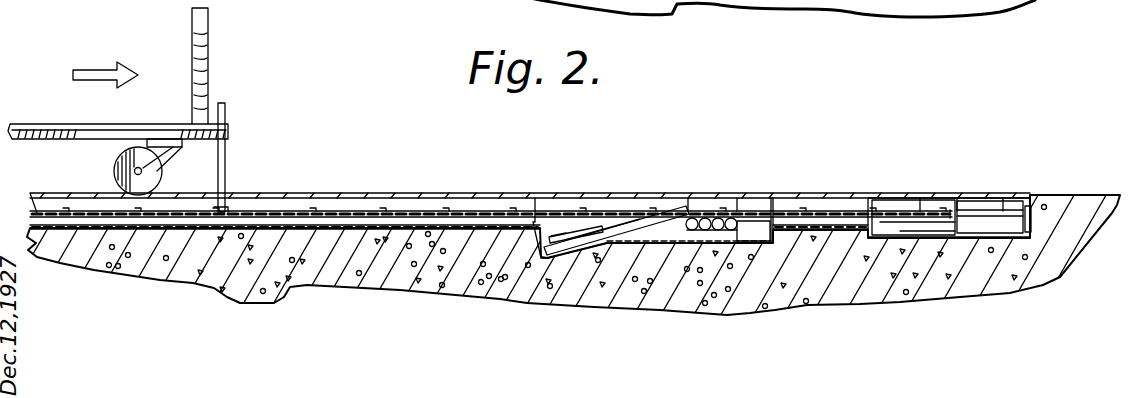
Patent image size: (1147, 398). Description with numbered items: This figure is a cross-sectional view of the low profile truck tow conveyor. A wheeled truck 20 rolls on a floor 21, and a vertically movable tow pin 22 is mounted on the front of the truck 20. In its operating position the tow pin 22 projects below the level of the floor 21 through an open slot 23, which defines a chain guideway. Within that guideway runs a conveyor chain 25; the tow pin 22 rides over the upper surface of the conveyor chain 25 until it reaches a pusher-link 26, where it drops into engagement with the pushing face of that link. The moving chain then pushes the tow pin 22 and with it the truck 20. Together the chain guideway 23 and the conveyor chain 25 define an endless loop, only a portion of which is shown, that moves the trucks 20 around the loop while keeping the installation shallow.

The wheeled truck 20 is at (60, 97).
The floor 21 is at (420, 158).
The tow pin 22 is at (228, 163).
The open slot 23 is at (277, 205).
The conveyor chain 25 is at (498, 176).
The pusher-link 26 is at (507, 208).